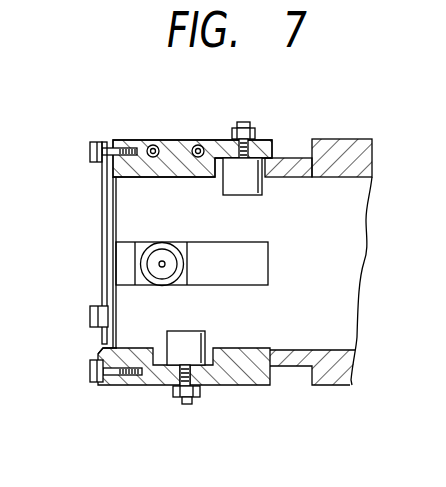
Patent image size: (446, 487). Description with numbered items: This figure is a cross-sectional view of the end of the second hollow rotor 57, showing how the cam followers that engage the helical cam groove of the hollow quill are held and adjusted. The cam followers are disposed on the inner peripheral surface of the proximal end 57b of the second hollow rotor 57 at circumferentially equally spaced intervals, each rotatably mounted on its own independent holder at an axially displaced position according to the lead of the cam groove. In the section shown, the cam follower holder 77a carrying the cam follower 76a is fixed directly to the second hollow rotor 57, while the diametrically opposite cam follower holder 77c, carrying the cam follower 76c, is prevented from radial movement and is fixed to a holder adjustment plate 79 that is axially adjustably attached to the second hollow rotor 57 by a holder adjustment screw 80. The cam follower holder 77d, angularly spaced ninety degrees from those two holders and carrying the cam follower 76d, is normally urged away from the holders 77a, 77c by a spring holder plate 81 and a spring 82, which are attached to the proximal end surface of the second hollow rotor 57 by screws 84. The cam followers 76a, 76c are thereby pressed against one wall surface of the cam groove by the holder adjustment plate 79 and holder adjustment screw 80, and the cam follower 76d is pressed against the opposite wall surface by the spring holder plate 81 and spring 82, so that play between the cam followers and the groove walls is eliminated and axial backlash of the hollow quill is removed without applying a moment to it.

The second hollow rotor 57 is at (355, 139).
The proximal end of the second hollow rotor 57b is at (300, 160).
The cam follower holder 77a is at (175, 141).
The cam follower holder 77c is at (243, 380).
The cam follower holder 77d is at (270, 262).
The cam follower 76a is at (250, 181).
The cam follower 76c is at (198, 333).
The cam follower 76d is at (165, 253).
The screws 84 is at (90, 152).
The spring holder plate 81 is at (101, 182).
The spring 82 is at (101, 264).
The holder adjustment plate 79 is at (101, 352).
The holder adjustment screw 80 is at (92, 368).